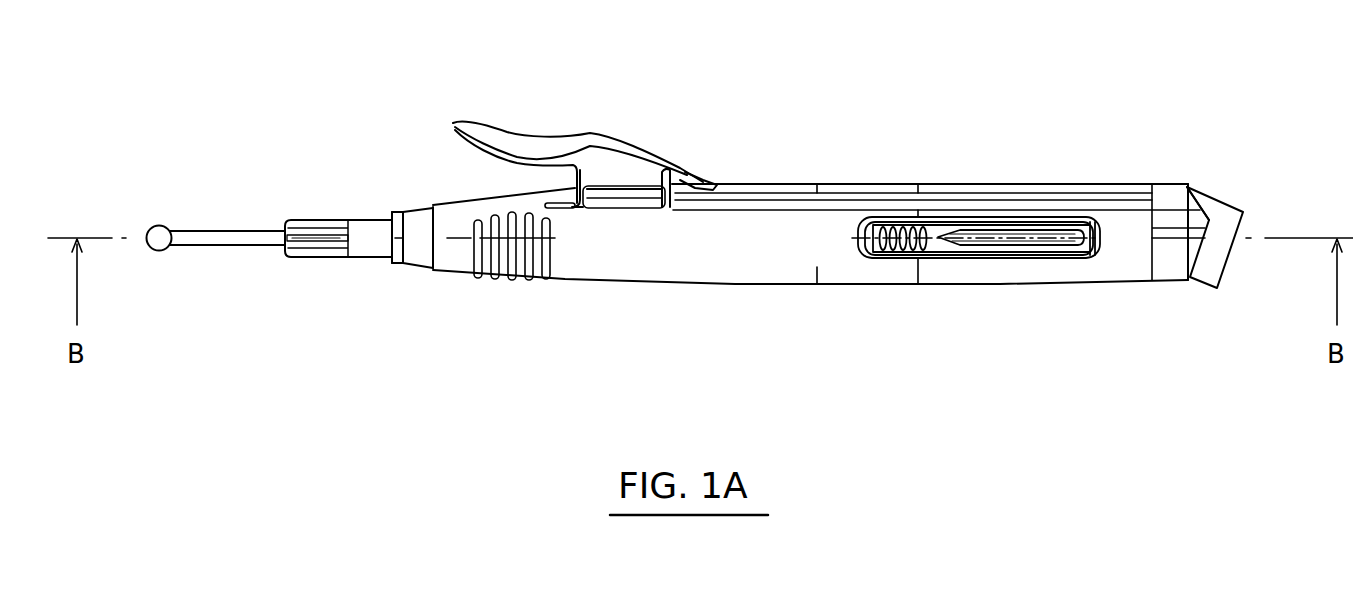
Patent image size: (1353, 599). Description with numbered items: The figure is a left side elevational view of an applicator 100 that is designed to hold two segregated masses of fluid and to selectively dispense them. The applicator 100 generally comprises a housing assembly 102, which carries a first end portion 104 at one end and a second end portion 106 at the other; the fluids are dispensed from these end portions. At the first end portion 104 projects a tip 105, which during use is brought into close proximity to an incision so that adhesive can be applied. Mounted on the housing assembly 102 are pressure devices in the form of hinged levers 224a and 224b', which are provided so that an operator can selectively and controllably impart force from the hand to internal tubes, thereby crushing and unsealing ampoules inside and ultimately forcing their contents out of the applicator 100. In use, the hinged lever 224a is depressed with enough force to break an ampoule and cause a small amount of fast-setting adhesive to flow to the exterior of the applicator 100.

The applicator 100 is at (878, 182).
The housing assembly 102 is at (977, 183).
The first end portion 104 is at (320, 257).
The tip 105 is at (185, 228).
The second end portion 106 is at (1170, 281).
The hinged lever 224a is at (582, 137).
The hinged lever 224b' is at (979, 287).